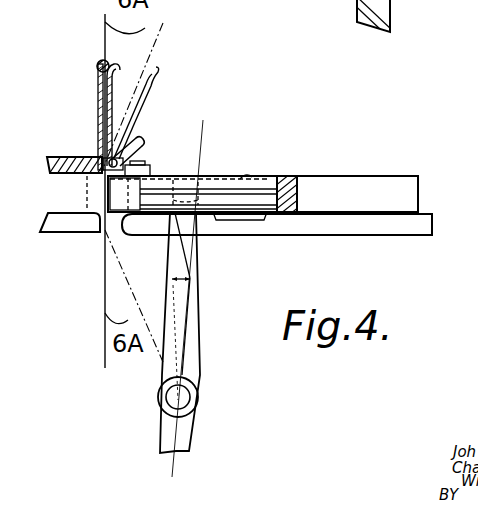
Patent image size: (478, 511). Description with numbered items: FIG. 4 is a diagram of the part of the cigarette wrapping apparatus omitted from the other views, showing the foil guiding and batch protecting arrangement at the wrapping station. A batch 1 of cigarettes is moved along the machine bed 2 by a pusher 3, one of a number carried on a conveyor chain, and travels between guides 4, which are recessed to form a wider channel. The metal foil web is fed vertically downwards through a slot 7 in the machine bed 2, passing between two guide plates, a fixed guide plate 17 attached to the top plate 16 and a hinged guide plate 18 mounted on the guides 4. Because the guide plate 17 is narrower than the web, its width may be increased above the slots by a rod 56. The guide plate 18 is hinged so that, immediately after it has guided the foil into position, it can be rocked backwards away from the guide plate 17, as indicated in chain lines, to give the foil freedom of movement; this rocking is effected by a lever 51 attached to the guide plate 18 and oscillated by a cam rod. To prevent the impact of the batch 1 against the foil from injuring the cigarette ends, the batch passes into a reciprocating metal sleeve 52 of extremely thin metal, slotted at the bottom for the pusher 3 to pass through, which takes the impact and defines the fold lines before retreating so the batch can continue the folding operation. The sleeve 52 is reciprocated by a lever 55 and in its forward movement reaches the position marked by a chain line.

The batch 1 is at (258, 184).
The machine bed 2 is at (369, 220).
The pusher 3 is at (305, 178).
The guides 4 is at (362, 183).
The slot 7 is at (106, 216).
The top plate 16 is at (79, 157).
The guide plate 17 is at (97, 94).
The guide plate 18 is at (115, 75).
The lever 51 is at (142, 140).
The reciprocating metal sleeve 52 is at (86, 190).
The lever 55 is at (190, 305).
The rod 56 is at (98, 62).